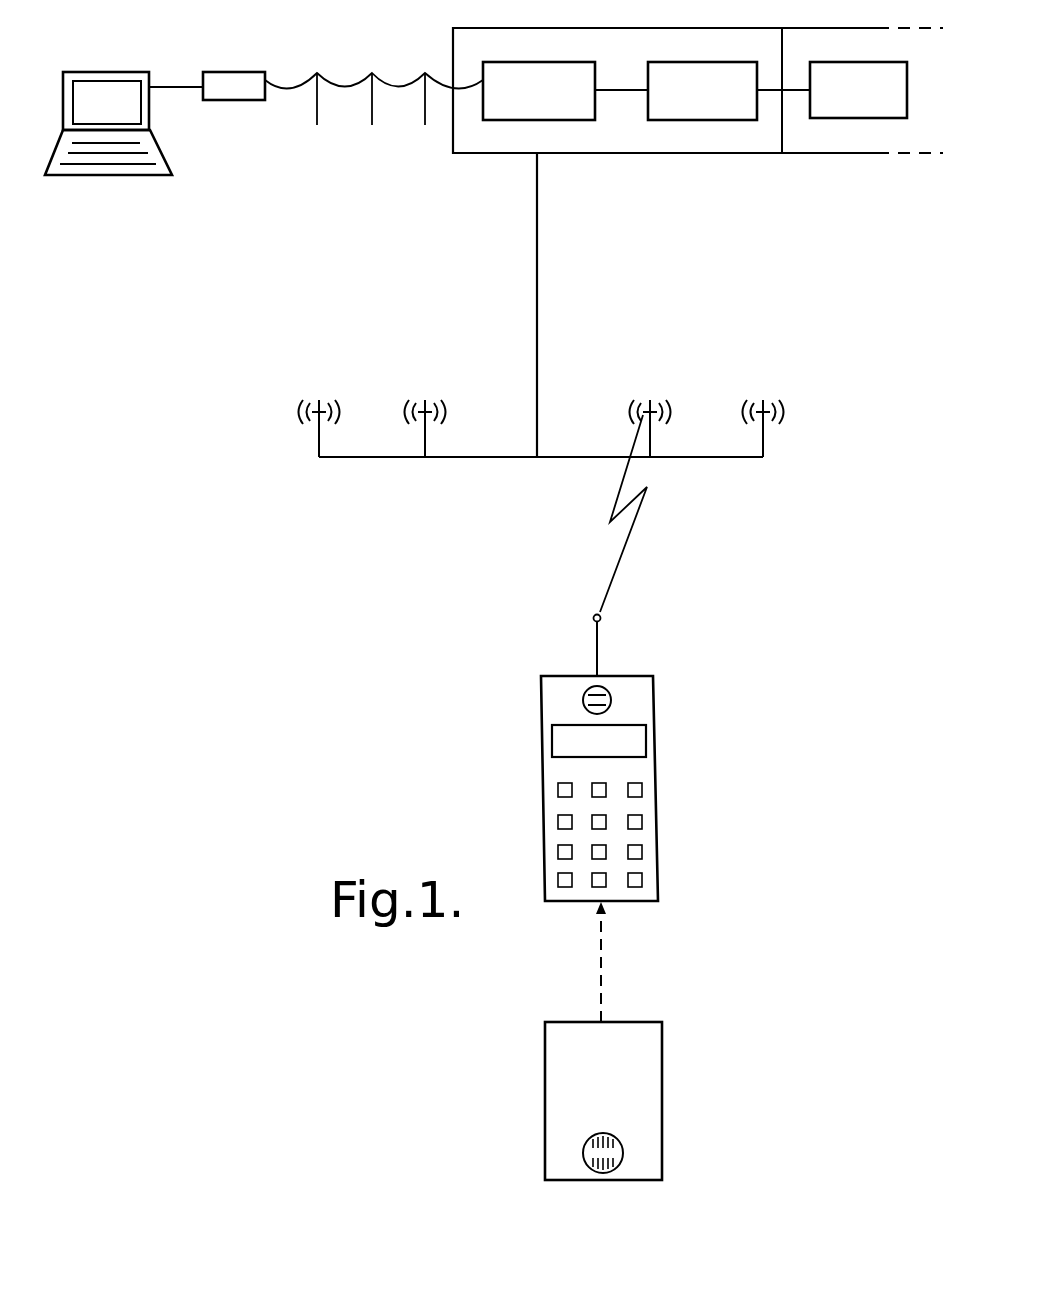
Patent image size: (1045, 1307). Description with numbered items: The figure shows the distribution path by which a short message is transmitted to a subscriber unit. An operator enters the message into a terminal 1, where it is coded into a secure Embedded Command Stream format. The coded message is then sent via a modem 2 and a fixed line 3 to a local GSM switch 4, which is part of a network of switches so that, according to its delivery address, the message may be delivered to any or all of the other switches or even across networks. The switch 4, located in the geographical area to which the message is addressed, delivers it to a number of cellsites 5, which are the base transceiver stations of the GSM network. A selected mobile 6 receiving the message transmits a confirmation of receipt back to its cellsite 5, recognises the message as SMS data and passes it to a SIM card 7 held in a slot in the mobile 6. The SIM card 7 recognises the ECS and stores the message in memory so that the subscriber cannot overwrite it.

The terminal 1 is at (116, 72).
The modem 2 is at (241, 72).
The fixed line 3 is at (345, 82).
The GSM switch 4 is at (495, 62).
The cellsite 5 is at (319, 442).
The mobile 6 is at (660, 802).
The SIM card 7 is at (662, 1127).